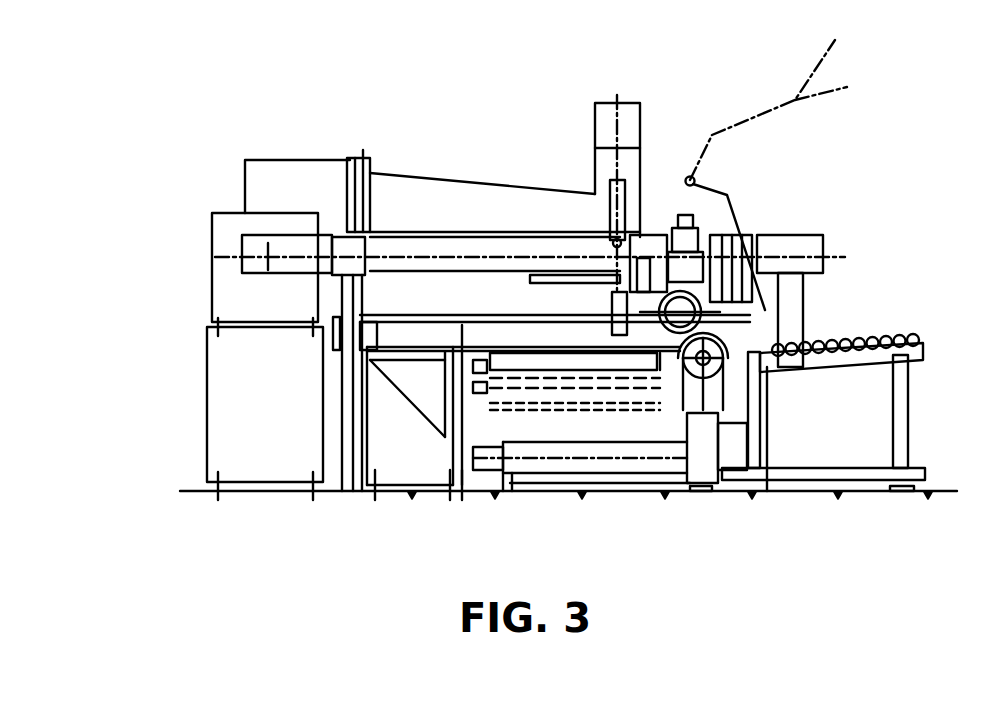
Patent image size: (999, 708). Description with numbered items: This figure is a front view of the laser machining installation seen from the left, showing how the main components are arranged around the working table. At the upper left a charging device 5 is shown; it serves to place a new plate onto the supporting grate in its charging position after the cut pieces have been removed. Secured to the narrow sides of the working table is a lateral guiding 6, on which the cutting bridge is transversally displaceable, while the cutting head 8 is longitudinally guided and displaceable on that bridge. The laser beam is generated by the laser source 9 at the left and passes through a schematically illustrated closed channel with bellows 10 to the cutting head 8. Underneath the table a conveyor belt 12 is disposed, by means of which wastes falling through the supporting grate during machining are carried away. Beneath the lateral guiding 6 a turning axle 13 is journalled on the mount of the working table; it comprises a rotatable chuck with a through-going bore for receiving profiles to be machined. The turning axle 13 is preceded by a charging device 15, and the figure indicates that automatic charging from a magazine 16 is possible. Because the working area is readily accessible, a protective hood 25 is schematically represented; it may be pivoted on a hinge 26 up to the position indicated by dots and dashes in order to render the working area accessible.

The charging device 5 is at (306, 150).
The lateral guiding 6 is at (403, 337).
The cutting head 8 is at (677, 220).
The laser source 9 is at (220, 292).
The bellows 10 is at (253, 243).
The conveyor belt 12 is at (575, 467).
The turning axle 13 is at (727, 348).
The charging device 15 is at (770, 500).
The magazine 16 is at (912, 322).
The protective hood 25 is at (737, 210).
The hinge 26 is at (689, 176).